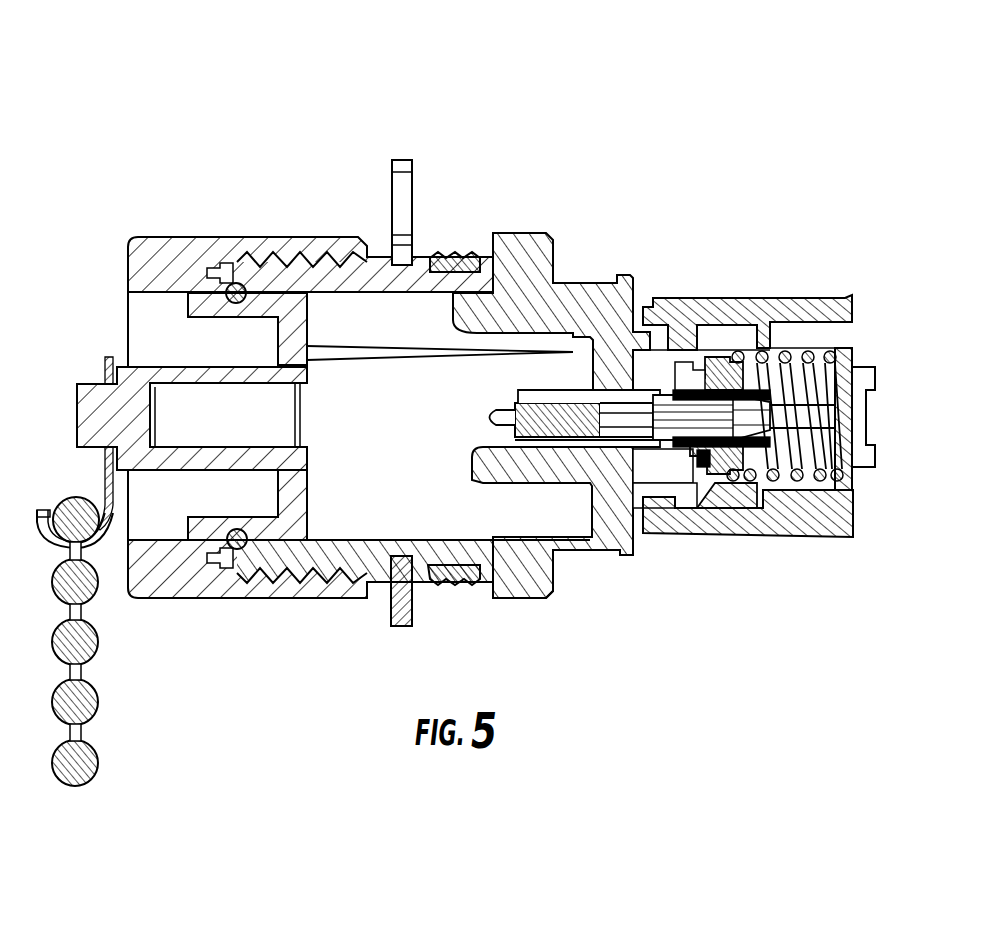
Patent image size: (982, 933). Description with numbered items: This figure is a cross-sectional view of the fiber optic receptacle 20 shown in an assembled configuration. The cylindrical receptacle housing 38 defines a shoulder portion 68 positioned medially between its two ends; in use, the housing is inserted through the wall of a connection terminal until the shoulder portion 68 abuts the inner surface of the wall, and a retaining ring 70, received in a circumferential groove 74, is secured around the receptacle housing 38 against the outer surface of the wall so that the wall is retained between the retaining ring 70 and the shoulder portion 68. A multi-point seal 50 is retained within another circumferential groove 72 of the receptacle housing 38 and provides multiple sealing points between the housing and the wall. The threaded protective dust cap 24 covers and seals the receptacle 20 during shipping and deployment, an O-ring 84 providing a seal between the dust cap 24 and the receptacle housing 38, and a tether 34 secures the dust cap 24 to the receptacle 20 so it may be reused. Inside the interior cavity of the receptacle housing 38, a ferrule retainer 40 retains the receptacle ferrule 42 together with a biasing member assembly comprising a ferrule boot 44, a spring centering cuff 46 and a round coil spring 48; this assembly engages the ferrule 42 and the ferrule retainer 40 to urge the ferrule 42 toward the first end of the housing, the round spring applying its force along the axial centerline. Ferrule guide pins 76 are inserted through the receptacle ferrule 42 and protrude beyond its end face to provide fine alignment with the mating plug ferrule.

The receptacle 20 is at (241, 55).
The protective dust cap 24 is at (153, 268).
The O-ring 84 is at (230, 285).
The retaining ring 70 is at (402, 172).
The multi-point seal 50 is at (438, 253).
The receptacle housing 38 is at (517, 252).
The receptacle ferrule 42 is at (566, 392).
The spring centering cuff 46 is at (715, 358).
The ferrule retainer 40 is at (743, 305).
The round coil spring 48 is at (808, 350).
The ferrule boot 44 is at (700, 462).
The shoulder portion 68 is at (545, 575).
The circumferential groove 72 is at (455, 560).
The circumferential groove 74 is at (398, 557).
The ferrule guide pins 76 is at (488, 413).
The tether 34 is at (103, 770).